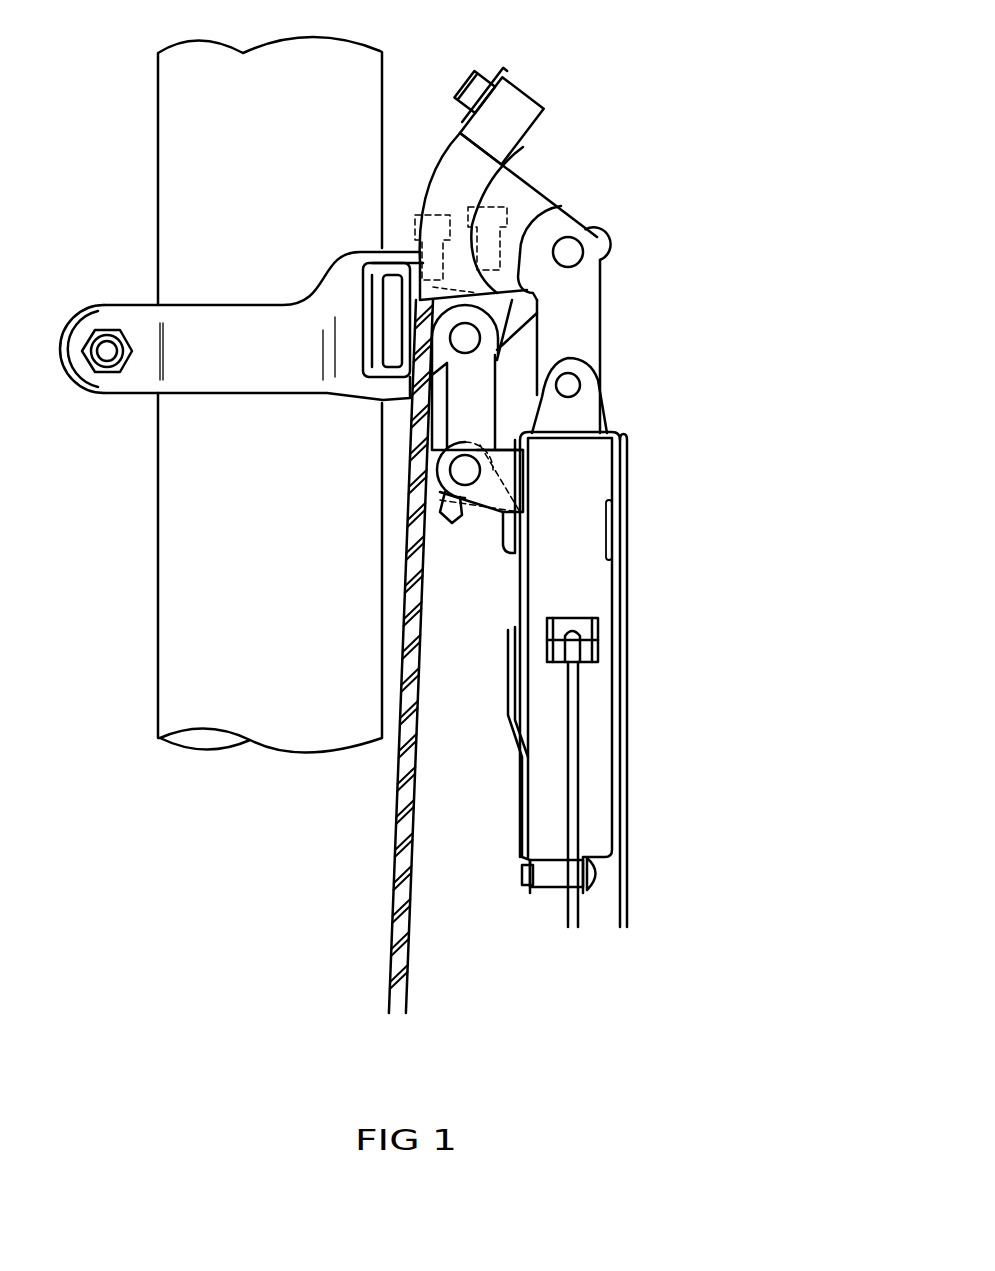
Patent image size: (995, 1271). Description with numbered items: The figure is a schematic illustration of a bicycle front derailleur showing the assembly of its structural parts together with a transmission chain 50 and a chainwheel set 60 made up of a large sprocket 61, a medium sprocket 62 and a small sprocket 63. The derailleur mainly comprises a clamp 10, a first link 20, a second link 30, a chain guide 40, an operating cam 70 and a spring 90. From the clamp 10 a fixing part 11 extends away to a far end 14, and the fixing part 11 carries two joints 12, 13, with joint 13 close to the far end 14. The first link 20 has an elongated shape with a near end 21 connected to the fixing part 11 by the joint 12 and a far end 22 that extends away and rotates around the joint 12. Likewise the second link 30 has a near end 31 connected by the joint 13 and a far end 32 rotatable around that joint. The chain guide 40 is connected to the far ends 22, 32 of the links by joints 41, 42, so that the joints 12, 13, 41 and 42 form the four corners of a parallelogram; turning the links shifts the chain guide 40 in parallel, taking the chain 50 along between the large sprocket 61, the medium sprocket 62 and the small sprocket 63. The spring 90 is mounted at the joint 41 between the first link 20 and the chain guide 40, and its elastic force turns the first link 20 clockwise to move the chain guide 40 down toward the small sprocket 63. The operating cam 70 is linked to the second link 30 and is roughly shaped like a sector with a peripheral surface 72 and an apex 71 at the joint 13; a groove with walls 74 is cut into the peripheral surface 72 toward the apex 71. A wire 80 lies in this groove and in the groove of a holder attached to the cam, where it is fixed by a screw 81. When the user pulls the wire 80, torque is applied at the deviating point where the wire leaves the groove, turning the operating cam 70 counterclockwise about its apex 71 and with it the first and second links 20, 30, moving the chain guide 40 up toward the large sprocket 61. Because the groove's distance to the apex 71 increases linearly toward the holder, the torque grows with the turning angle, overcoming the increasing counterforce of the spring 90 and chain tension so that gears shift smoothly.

The clamp 10 is at (198, 370).
The first link 20 is at (460, 410).
The near end 21 is at (458, 335).
The joint 12 is at (440, 338).
The far end 22 is at (458, 432).
The joint 41 is at (465, 470).
The spring 90 is at (513, 527).
The walls 74 is at (423, 165).
The peripheral surface 72 is at (460, 137).
The operating cam 70 is at (538, 163).
The screw 81 is at (480, 88).
The apex 71 is at (532, 217).
The joint 13 is at (583, 216).
The far end 14 is at (600, 238).
The near end 31 is at (590, 260).
The fixing part 11 is at (530, 307).
The second link 30 is at (583, 312).
The joint 42 is at (577, 390).
The far end 32 is at (587, 363).
The chainwheel set 60 is at (655, 845).
The large sprocket 61 is at (621, 899).
The medium sprocket 62 is at (573, 913).
The small sprocket 63 is at (528, 918).
The chain guide 40 is at (522, 828).
The transmission chain 50 is at (590, 627).
The wire 80 is at (402, 852).